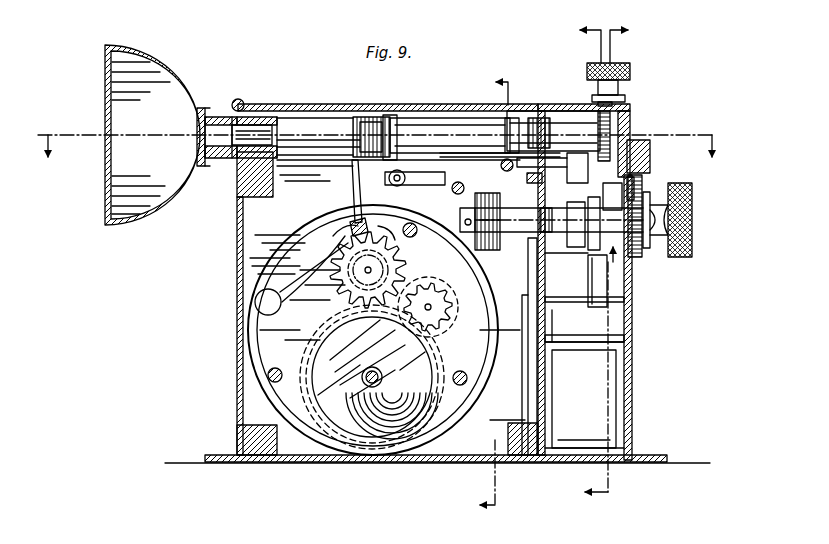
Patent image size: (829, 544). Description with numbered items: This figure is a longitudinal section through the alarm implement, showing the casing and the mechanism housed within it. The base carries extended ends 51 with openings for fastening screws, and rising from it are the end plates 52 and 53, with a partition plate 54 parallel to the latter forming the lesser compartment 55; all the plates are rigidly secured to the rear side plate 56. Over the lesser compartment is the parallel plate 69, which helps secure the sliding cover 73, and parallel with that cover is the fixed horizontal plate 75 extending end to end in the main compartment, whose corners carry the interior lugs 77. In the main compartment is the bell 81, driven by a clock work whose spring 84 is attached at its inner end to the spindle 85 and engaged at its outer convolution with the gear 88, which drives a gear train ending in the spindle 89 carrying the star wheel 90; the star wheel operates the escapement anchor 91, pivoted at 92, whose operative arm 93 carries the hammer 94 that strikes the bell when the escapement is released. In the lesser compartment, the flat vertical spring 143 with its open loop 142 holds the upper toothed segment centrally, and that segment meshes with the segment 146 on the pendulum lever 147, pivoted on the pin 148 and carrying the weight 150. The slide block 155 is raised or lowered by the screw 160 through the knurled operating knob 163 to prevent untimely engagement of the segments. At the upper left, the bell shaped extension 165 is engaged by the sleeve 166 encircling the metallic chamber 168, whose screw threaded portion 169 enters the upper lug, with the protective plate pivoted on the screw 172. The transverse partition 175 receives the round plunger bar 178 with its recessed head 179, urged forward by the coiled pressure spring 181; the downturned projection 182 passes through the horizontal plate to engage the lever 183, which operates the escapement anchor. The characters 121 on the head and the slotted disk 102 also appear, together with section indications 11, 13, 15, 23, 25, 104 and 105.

The bell shaped extension 165 is at (162, 50).
The sleeve 166 is at (224, 80).
The metallic chamber 168 is at (215, 146).
The screw threaded portion 169 is at (241, 99).
The screw 172 is at (280, 130).
The round plunger bar 178 is at (262, 115).
The fixed horizontal plate 75 is at (340, 156).
The recessed head 179 is at (362, 117).
The sliding cover 73 is at (366, 122).
The coiled pressure spring 181 is at (392, 114).
The transverse partition 175 is at (455, 125).
The section line 13 is at (506, 295).
The parallel plate 69 is at (546, 104).
The section line 11 is at (608, 255).
The section line 23 is at (622, 36).
The knurled operating knob 163 is at (632, 70).
The screw 160 is at (612, 120).
The section line 15 is at (383, 135).
The bearing block 105 is at (652, 160).
The slide block 155 is at (645, 178).
The slotted disk 102 is at (694, 200).
The knob neck 104 is at (694, 226).
The characters 121 is at (505, 250).
The open loop 142 is at (530, 250).
The flat vertical spring 143 is at (526, 300).
The section arrow 25 is at (621, 261).
The segment 146 is at (609, 280).
The pin 148 is at (626, 303).
The compartment 55 is at (634, 325).
The end plate 53 is at (634, 340).
The partition plate 54 is at (548, 325).
The pendulum lever 147 is at (626, 344).
The weight 150 is at (604, 428).
The ends 51 is at (665, 458).
The interior lugs 77 is at (243, 200).
The spring 84 is at (385, 425).
The spindle 85 is at (362, 380).
The bell 81 is at (251, 365).
The spindle 89 is at (366, 272).
The hammer 94 is at (265, 305).
The operative arm 93 is at (328, 282).
The end plate 52 is at (255, 300).
The rear side plate 56 is at (255, 248).
The pivot 92 is at (356, 206).
The downturned projection 182 is at (335, 175).
The lever 183 is at (373, 181).
The escapement anchor 91 is at (383, 250).
The star wheel 90 is at (398, 262).
The gear 88 is at (440, 322).